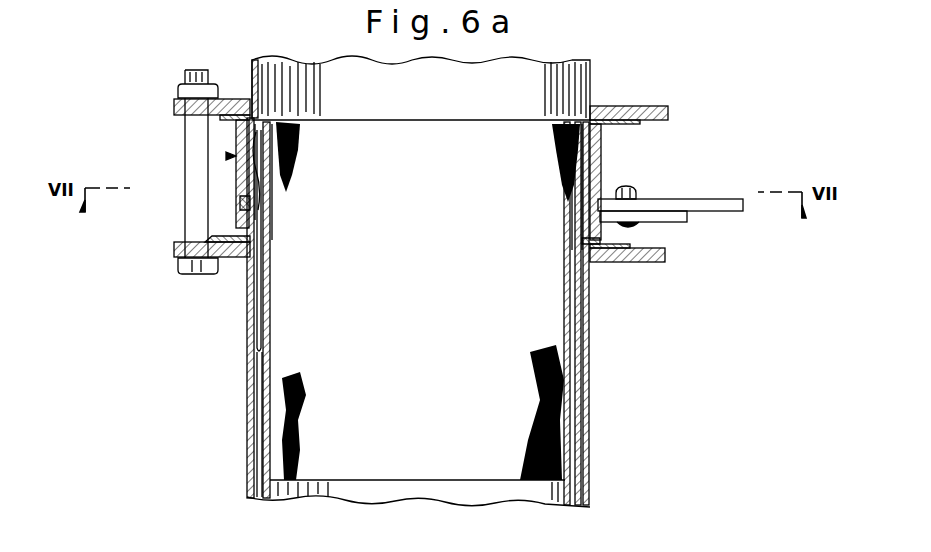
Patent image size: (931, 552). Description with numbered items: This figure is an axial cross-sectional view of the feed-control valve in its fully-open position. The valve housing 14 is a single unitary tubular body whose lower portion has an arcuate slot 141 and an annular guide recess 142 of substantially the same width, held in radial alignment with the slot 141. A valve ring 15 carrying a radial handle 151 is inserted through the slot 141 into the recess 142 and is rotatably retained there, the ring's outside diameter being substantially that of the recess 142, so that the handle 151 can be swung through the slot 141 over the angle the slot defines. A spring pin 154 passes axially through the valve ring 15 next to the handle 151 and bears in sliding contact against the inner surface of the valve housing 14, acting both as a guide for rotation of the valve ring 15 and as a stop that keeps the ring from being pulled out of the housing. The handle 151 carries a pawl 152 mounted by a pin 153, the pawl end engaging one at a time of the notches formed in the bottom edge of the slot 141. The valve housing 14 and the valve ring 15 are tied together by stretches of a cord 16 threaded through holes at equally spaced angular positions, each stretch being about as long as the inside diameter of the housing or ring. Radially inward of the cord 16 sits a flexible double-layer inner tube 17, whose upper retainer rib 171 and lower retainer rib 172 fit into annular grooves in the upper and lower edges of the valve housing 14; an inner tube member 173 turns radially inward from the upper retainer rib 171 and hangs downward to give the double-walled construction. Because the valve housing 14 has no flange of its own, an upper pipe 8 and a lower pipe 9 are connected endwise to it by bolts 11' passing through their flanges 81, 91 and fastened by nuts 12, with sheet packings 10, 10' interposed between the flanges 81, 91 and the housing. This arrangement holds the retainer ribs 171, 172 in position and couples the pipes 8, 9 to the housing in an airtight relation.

The upper pipe 8 is at (592, 76).
The lower pipe 9 is at (590, 462).
The sheet packing 10 is at (426, 126).
The sheet packing 10' is at (650, 251).
The bolt 11' is at (198, 208).
The nut 12 is at (178, 92).
The valve housing 14 is at (240, 170).
The valve ring 15 is at (270, 172).
The cord 16 is at (255, 182).
The flexible double-layer inner tube 17 is at (247, 345).
The flange 81 is at (174, 107).
The flange 91 is at (180, 257).
The arcuate slot 141 is at (604, 172).
The annular guide recess 142 is at (242, 203).
The handle 151 is at (716, 198).
The pawl 152 is at (690, 222).
The pin 153 is at (633, 190).
The spring pin 154 is at (584, 240).
The upper retainer rib 171 is at (226, 156).
The lower retainer rib 172 is at (222, 238).
The inner tube member 173 is at (260, 448).